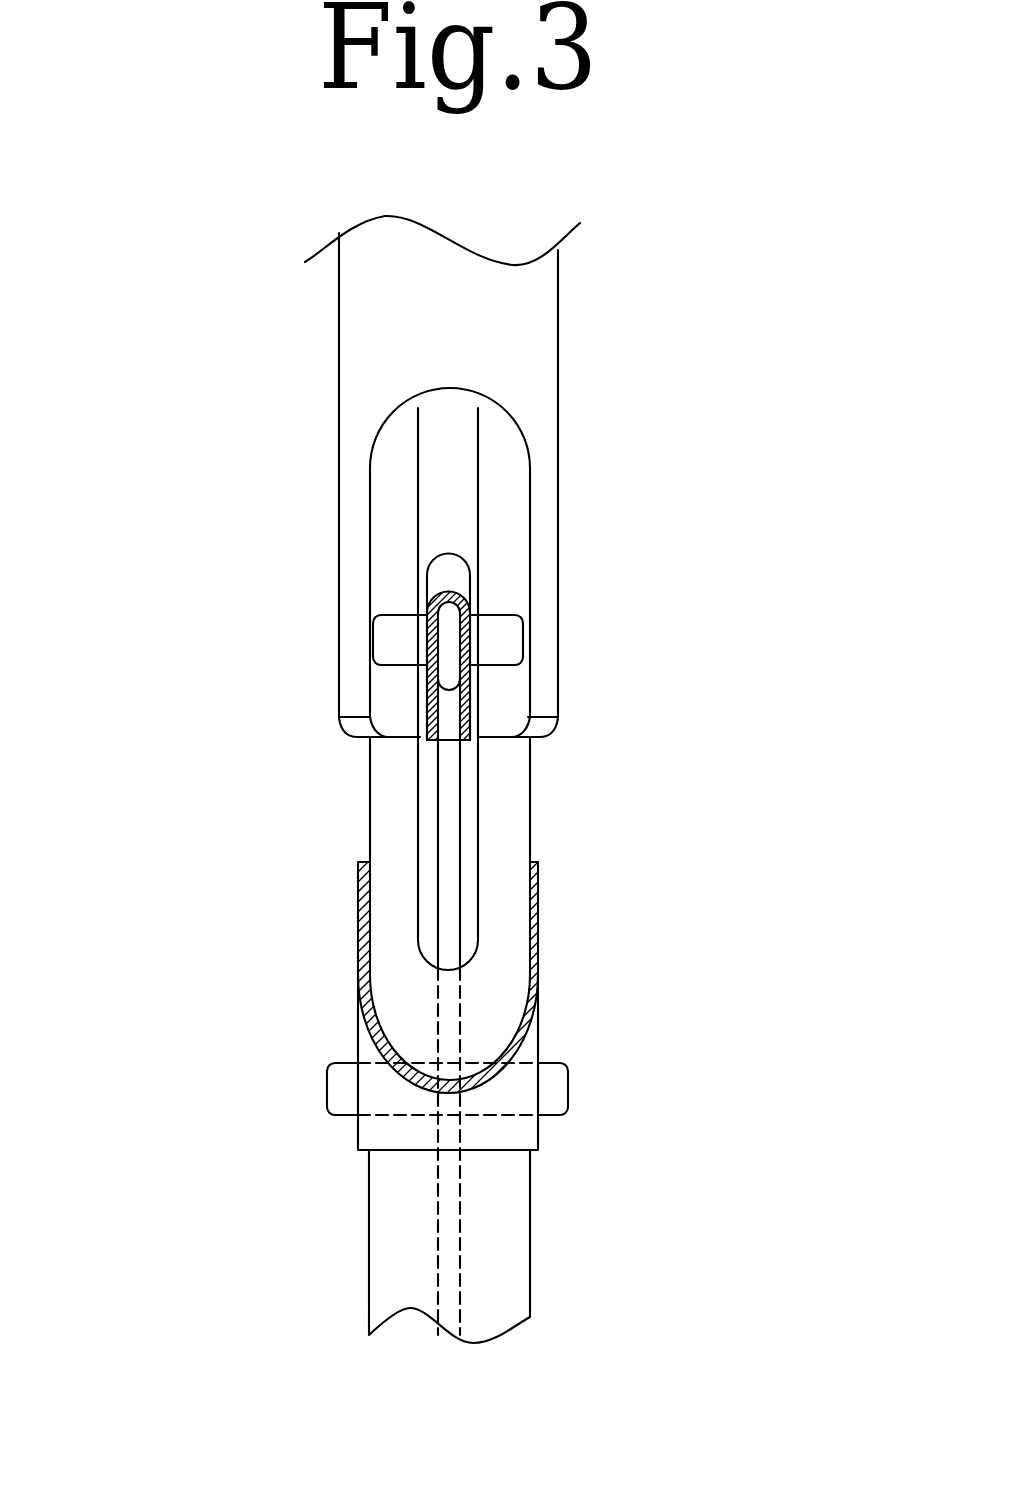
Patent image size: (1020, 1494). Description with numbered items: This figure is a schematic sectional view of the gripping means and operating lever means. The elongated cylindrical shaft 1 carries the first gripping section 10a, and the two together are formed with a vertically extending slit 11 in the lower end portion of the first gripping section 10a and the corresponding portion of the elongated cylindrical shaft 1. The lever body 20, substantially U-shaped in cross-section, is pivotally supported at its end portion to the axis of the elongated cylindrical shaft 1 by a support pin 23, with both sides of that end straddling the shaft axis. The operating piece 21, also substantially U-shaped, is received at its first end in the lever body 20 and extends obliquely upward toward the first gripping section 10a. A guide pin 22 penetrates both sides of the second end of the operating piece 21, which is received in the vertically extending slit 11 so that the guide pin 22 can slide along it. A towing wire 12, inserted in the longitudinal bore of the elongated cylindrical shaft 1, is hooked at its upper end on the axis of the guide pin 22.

The elongated cylindrical shaft 1 is at (320, 1273).
The first gripping section 10a is at (520, 333).
The vertically extending slit 11 is at (423, 493).
The towing wire 12 is at (460, 1238).
The lever body 20 is at (538, 942).
The operating piece 21 is at (443, 568).
The guide pin 22 is at (510, 633).
The support pin 23 is at (340, 1087).